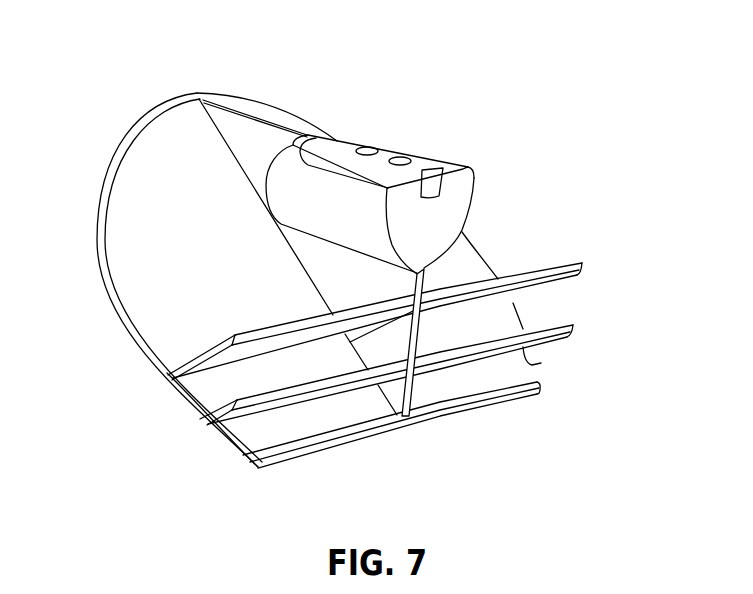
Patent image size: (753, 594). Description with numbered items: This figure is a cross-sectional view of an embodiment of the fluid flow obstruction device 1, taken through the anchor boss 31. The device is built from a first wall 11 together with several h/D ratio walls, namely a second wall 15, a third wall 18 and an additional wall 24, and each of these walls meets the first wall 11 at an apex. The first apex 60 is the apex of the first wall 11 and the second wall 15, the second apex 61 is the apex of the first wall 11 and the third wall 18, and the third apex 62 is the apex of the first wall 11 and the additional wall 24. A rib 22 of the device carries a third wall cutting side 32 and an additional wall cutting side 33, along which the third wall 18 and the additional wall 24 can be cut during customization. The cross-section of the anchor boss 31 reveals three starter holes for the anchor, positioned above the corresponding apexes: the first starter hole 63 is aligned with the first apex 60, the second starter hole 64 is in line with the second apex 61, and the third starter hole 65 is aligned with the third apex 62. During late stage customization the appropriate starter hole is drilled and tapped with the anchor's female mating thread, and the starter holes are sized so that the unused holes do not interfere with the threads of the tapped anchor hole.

The fluid flow obstruction device 1 is at (653, 76).
The first wall 11 is at (155, 137).
The rib 22 is at (250, 128).
The anchor boss 31 is at (468, 182).
The first starter hole 63 is at (433, 176).
The second starter hole 64 is at (366, 147).
The third starter hole 65 is at (398, 157).
The third wall 18 is at (575, 263).
The third wall cutting side 32 is at (535, 288).
The additional wall 24 is at (563, 336).
The additional wall cutting side 33 is at (533, 363).
The second wall 15 is at (527, 392).
The second apex 61 is at (157, 370).
The third apex 62 is at (195, 414).
The first apex 60 is at (235, 458).